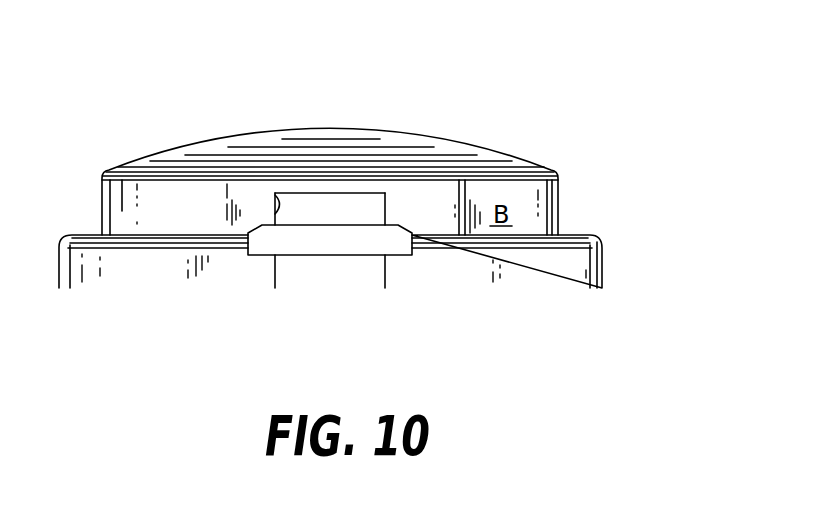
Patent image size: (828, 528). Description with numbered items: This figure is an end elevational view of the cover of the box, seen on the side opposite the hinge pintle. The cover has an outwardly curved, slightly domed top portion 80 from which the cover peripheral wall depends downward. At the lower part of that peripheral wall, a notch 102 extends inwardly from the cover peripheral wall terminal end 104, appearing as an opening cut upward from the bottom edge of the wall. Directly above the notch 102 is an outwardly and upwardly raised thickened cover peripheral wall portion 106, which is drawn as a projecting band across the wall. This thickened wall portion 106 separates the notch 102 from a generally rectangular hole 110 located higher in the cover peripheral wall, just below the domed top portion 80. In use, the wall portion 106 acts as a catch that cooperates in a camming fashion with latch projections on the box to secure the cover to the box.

The domed top portion 80 is at (338, 130).
The notch 102 is at (275, 268).
The cover peripheral wall terminal end 104 is at (537, 288).
The thickened cover peripheral wall portion 106 is at (333, 237).
The rectangular hole 110 is at (276, 196).